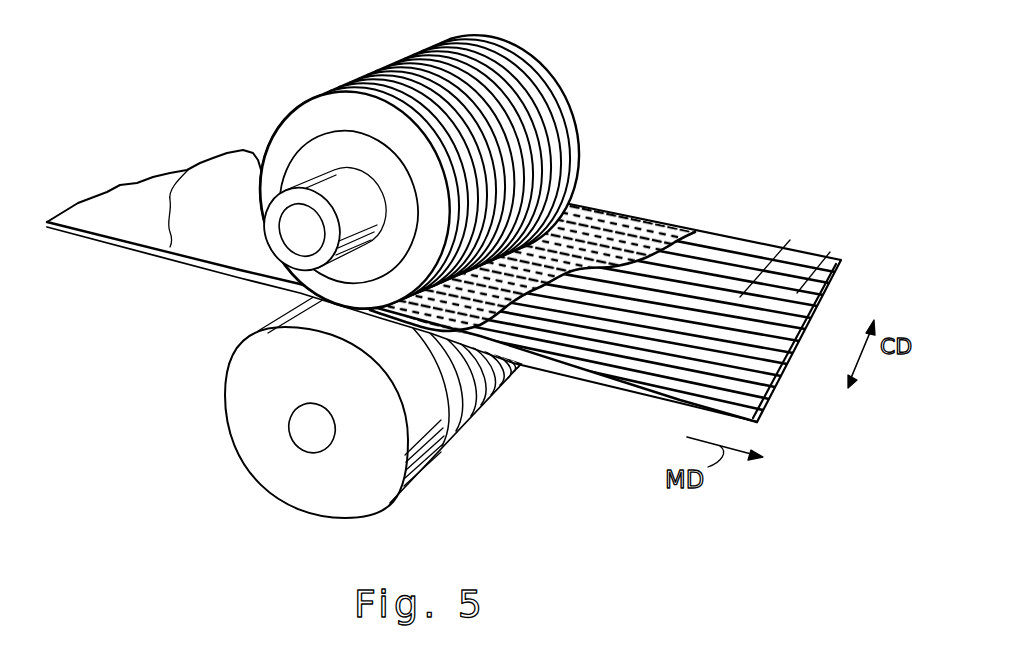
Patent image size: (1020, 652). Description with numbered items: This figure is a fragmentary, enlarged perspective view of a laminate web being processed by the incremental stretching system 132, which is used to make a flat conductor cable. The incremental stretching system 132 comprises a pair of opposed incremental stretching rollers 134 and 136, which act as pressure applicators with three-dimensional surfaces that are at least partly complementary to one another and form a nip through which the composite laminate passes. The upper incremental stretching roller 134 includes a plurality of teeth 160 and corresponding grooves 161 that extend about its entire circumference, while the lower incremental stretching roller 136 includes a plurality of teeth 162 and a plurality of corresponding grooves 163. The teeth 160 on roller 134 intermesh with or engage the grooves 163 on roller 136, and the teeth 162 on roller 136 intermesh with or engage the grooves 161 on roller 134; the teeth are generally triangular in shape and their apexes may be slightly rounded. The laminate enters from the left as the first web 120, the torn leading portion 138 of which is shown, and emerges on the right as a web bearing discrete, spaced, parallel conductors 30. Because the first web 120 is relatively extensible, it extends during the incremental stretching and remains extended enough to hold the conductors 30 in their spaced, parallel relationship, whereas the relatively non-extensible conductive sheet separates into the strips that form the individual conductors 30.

The conductors 30 is at (797, 293).
The first web 120 is at (460, 260).
The incremental stretching system 132 is at (460, 263).
The incremental stretching roller 134 is at (425, 170).
The incremental stretching roller 136 is at (379, 405).
The torn leading portion of web 138 is at (128, 210).
The teeth 160 is at (453, 158).
The grooves 161 is at (523, 44).
The teeth 162 is at (512, 387).
The grooves 163 is at (475, 417).